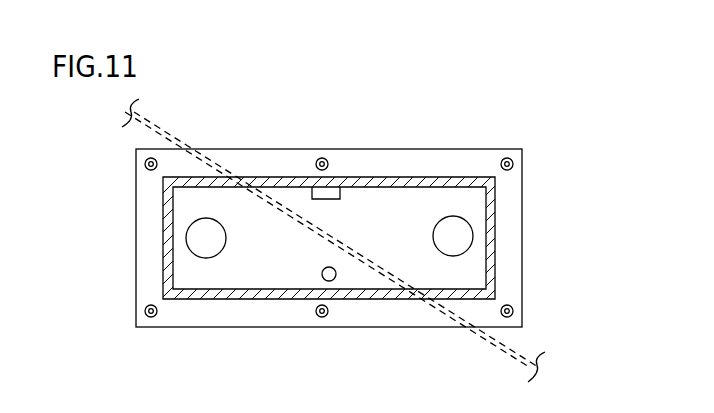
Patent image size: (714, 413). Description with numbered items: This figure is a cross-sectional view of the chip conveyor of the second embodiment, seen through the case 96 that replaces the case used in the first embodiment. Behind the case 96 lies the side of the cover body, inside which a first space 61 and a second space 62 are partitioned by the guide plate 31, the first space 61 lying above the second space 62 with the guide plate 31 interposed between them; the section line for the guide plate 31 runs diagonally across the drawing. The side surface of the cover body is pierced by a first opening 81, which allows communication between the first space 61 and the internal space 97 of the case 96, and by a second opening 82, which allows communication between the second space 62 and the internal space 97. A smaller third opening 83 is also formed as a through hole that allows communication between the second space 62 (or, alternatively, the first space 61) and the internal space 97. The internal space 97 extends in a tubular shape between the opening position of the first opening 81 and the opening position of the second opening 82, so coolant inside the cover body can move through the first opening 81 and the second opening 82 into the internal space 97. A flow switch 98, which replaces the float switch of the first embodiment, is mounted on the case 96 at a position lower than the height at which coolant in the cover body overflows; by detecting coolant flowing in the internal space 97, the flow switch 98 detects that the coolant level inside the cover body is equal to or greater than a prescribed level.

The guide plate 31 is at (517, 348).
The first space 61 is at (383, 210).
The second space 62 is at (263, 253).
The first opening 81 is at (465, 222).
The second opening 82 is at (213, 230).
The third opening 83 is at (323, 269).
The case 96 is at (477, 149).
The internal space 97 is at (393, 237).
The flow switch 98 is at (330, 191).